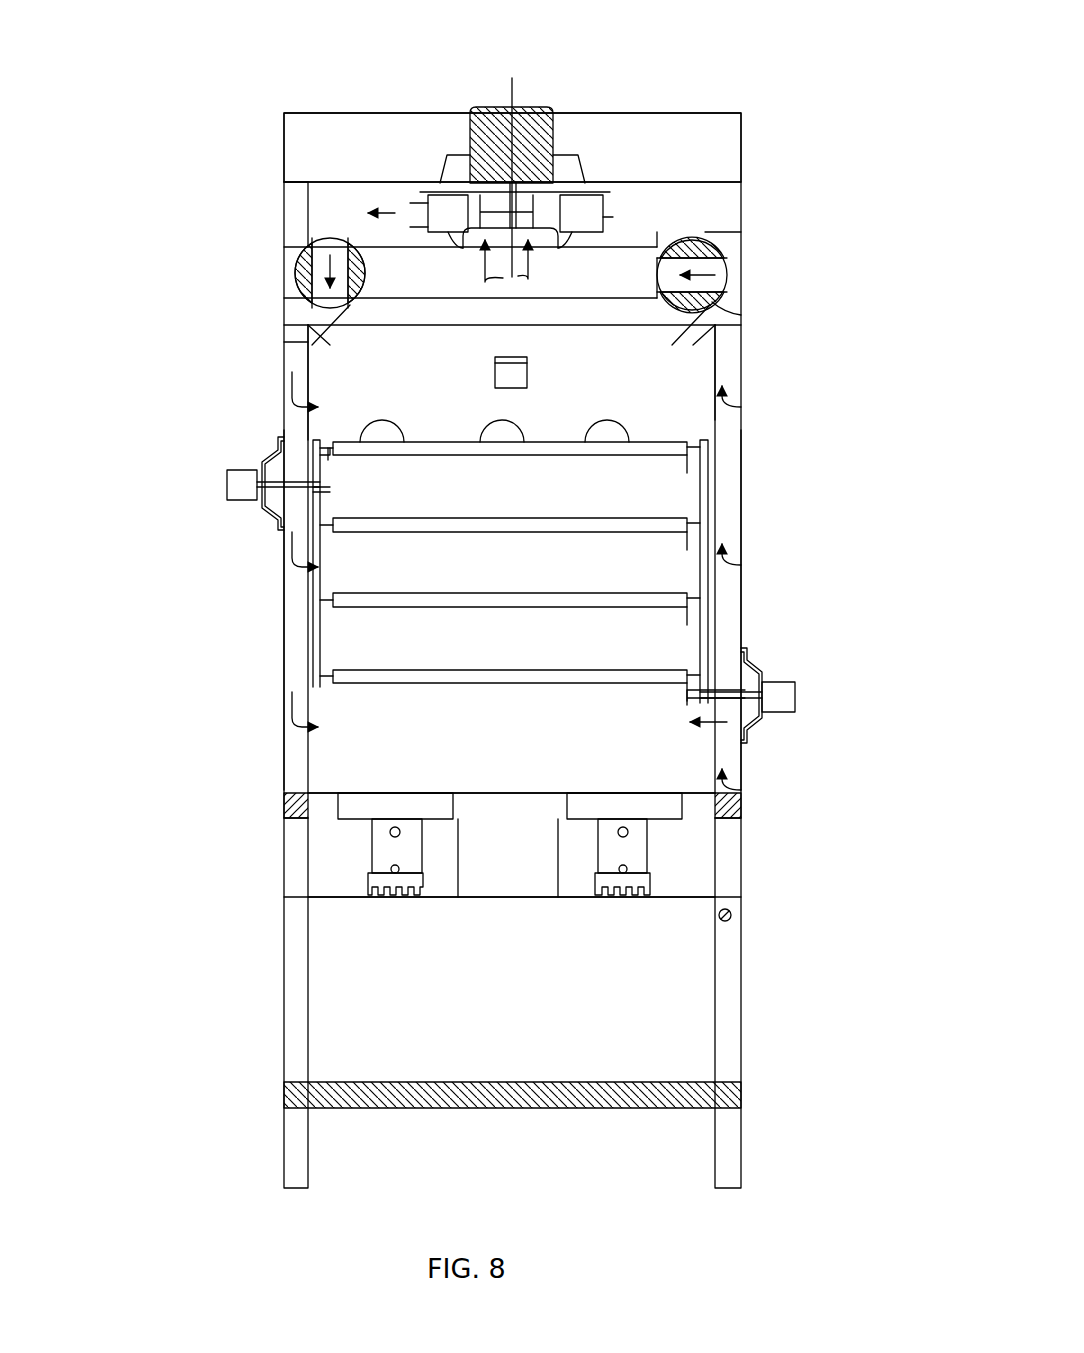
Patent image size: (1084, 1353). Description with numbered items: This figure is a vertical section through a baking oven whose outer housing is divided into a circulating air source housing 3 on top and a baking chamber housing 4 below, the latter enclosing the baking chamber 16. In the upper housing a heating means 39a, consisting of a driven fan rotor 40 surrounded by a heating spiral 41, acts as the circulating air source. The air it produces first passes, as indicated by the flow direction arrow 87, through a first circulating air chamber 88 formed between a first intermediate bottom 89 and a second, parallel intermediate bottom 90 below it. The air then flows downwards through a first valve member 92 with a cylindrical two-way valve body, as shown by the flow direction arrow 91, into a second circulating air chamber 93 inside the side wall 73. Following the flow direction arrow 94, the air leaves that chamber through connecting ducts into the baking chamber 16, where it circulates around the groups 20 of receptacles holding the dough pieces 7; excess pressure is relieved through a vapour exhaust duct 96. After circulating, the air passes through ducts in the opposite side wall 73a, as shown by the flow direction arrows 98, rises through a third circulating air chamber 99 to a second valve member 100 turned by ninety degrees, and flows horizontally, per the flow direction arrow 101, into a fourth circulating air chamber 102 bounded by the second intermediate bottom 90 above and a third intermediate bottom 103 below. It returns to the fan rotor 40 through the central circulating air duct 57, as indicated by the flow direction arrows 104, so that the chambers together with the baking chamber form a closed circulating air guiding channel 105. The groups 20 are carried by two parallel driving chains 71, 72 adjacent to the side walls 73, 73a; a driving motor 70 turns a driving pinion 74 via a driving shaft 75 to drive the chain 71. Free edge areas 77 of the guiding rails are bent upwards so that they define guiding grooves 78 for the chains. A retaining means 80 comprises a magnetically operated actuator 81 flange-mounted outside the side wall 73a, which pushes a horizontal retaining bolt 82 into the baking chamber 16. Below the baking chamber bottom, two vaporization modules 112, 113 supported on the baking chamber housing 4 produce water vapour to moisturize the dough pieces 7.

The circulating air source housing 3 is at (695, 165).
The baking chamber housing 4 is at (745, 428).
The dough pieces 7 is at (607, 440).
The baking chamber 16 is at (330, 772).
The groups of receptacles 20 is at (537, 462).
The heating means 39a is at (525, 105).
The fan rotor 40 is at (590, 197).
The heating spiral 41 is at (585, 213).
The circulating air duct 57 is at (553, 245).
The driving motor 70 is at (240, 482).
The driving chain 71 is at (318, 630).
The driving chain 72 is at (706, 489).
The side wall 73 is at (284, 612).
The side wall 73a is at (740, 615).
The driving pinion 74 is at (318, 493).
The driving shaft 75 is at (284, 425).
The free edge areas 77 is at (327, 457).
The guiding grooves 78 is at (718, 465).
The retaining means 80 is at (758, 678).
The actuator 81 is at (778, 697).
The retaining bolt 82 is at (688, 702).
The flow direction arrow 87 is at (305, 230).
The first circulating air chamber 88 is at (295, 205).
The first intermediate bottom 89 is at (413, 183).
The second intermediate bottom 90 is at (660, 232).
The flow direction arrow 91 is at (312, 278).
The first valve member 92 is at (302, 292).
The second circulating air chamber 93 is at (295, 342).
The flow direction arrow 94 is at (292, 380).
The vapour exhaust duct 96 is at (495, 370).
The flow direction arrows 98 is at (740, 402).
The third circulating air chamber 99 is at (728, 351).
The second valve member 100 is at (672, 306).
The flow direction arrow 101 is at (704, 285).
The fourth circulating air chamber 102 is at (643, 298).
The third intermediate bottom 103 is at (410, 298).
The flow direction arrows 104 is at (530, 282).
The circulating air guiding channel 105 is at (300, 192).
The vaporization module 112 is at (378, 851).
The vaporization module 113 is at (640, 862).